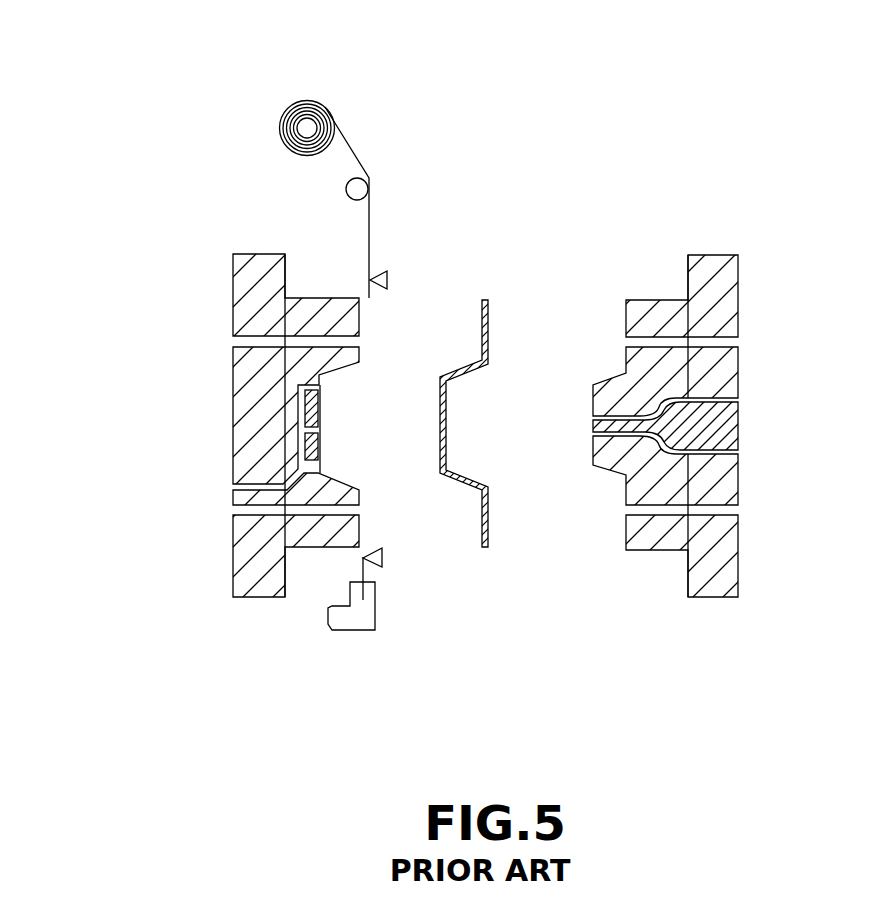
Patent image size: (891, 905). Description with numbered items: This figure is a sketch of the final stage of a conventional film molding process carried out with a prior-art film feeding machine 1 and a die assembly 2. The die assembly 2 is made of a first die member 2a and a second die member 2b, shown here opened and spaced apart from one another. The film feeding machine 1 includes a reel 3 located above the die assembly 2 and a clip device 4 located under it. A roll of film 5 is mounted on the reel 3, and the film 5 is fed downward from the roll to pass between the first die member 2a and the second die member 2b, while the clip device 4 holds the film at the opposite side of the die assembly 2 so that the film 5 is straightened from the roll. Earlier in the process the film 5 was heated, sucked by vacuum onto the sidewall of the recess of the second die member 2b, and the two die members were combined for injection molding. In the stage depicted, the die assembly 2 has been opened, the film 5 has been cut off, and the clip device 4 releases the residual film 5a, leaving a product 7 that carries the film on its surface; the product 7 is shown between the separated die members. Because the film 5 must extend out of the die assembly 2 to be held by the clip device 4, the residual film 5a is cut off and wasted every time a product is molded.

The film feeding machine 1 is at (535, 604).
The die assembly 2 is at (746, 358).
The first die member 2a is at (740, 487).
The second die member 2b is at (232, 405).
The reel 3 is at (301, 101).
The clip device 4 is at (357, 631).
The film 5 is at (371, 246).
The residual film 5a is at (366, 563).
The product 7 is at (494, 332).